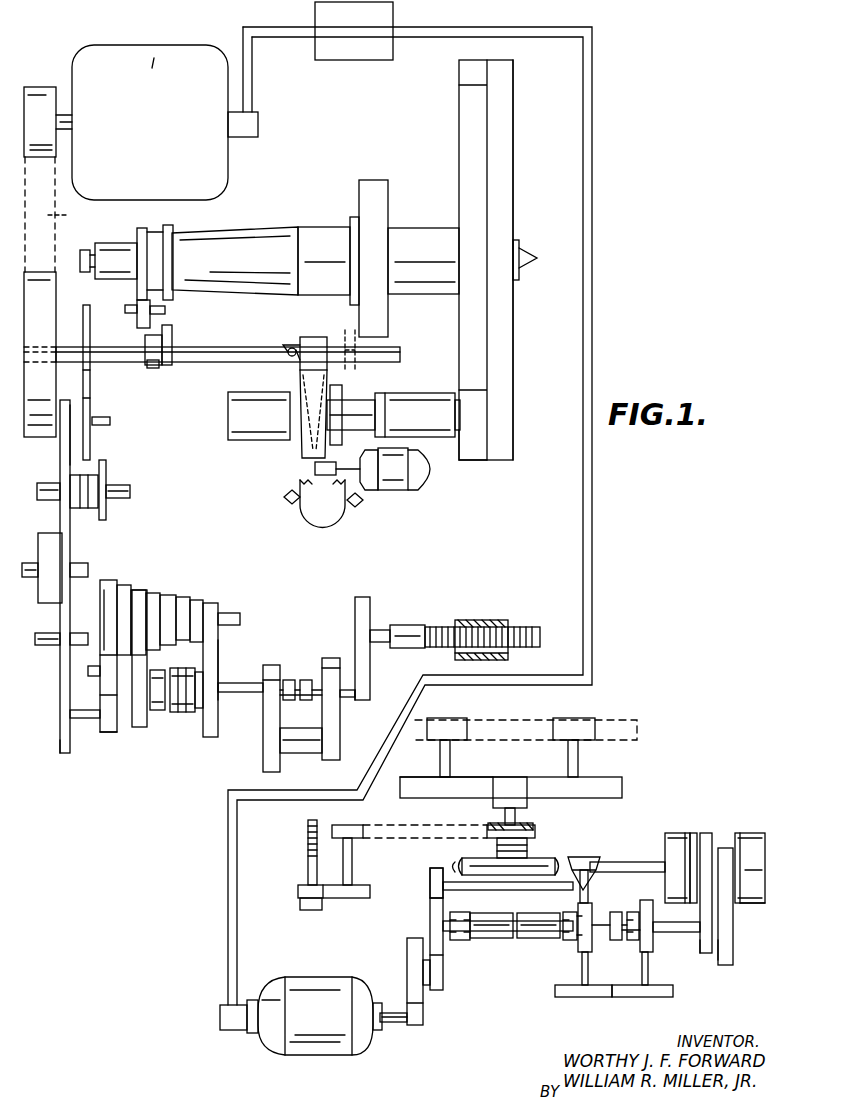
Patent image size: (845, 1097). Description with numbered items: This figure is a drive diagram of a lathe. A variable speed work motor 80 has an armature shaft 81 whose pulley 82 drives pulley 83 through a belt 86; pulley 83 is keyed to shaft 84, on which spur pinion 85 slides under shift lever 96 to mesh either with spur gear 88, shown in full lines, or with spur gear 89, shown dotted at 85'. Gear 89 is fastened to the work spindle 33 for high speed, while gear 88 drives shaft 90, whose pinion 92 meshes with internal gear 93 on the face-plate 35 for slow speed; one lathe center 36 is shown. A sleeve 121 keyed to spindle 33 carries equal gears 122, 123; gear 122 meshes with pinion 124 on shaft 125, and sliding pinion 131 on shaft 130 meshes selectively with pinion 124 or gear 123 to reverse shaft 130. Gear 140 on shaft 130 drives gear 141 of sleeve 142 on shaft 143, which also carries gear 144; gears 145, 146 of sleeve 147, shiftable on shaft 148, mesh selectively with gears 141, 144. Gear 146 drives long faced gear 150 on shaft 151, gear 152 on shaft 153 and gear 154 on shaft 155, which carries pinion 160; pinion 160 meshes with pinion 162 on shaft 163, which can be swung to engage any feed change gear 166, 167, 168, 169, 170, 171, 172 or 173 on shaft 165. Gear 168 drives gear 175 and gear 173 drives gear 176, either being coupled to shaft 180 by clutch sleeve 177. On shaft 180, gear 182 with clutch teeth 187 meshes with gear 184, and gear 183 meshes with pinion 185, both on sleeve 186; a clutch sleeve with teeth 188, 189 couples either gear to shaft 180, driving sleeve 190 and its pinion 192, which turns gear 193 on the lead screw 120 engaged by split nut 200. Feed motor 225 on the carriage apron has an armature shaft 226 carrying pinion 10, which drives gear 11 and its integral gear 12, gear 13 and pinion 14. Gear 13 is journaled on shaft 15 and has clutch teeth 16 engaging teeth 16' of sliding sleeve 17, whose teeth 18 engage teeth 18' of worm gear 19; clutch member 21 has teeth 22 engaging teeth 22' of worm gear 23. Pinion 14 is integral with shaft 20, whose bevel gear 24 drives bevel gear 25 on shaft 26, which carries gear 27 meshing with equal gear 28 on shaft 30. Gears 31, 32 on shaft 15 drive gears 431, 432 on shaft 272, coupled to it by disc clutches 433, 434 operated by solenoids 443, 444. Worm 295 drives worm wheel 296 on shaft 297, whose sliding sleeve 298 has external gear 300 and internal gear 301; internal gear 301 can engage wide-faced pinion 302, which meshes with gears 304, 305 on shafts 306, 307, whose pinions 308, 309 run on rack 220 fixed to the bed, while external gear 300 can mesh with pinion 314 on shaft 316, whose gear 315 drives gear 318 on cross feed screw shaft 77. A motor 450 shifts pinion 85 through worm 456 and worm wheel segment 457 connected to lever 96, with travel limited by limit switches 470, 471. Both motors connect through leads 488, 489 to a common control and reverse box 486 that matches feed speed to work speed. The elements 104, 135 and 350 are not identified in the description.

The spur pinion 10 is at (420, 1015).
The spur gear 11 is at (410, 962).
The spur gear 12 is at (432, 976).
The spur gear 13 is at (430, 916).
The spur pinion 14 is at (430, 883).
The shaft 15 is at (694, 927).
The face clutch teeth 16 is at (459, 939).
The face clutch teeth 16' is at (491, 940).
The sleeve 17 is at (508, 927).
The face clutch teeth 18 is at (558, 941).
The face clutch teeth 18' is at (559, 911).
The worm gear 19 is at (588, 950).
The shaft 20 is at (488, 886).
The slidable clutch member 21 is at (612, 915).
The face clutch teeth 22 is at (626, 951).
The face clutch teeth 22' is at (634, 908).
The worm gear 23 is at (653, 941).
The bevel gear 24 is at (540, 889).
The bevel gear 25 is at (585, 858).
The shaft 26 is at (590, 886).
The spur gear 27 is at (592, 997).
The spur gear 28 is at (647, 997).
The shaft 30 is at (648, 965).
The spur gear 31 is at (706, 955).
The spur gear 32 is at (733, 946).
The work spindle 33 is at (327, 240).
The face-plate 35 is at (503, 321).
The center 36 is at (537, 252).
The screw shaft 77 is at (308, 836).
The motor 80 is at (213, 156).
The armature shaft 81 is at (62, 129).
The pulley 82 is at (42, 158).
The pulley 83 is at (40, 285).
The shaft 84 is at (228, 352).
The spur pinion 85 is at (306, 385).
The spur pinion shifted position 85' is at (386, 343).
The belt 86 is at (69, 215).
The spur gear 88 is at (312, 446).
The spur gear 89 is at (380, 210).
The shaft 90 is at (357, 406).
The pinion 92 is at (470, 428).
The internal gear 93 is at (470, 85).
The shift lever 96 is at (290, 389).
The cylinder 104 is at (420, 410).
The lead screw 120 is at (415, 633).
The sleeve 121 is at (150, 238).
The spur gear 122 is at (136, 240).
The spur gear 123 is at (173, 233).
The spur pinion 124 is at (163, 309).
The shaft 125 is at (131, 308).
The shaft 130 is at (146, 343).
The spur pinion 131 is at (166, 338).
The pin 135 is at (158, 363).
The spur gear 140 is at (90, 372).
The spur gear 141 is at (90, 400).
The sleeve 142 is at (76, 430).
The shaft 143 is at (112, 421).
The spur gear 144 is at (60, 448).
The gear 145 is at (106, 478).
The gear 146 is at (60, 505).
The sleeve 147 is at (88, 511).
The shaft 148 is at (126, 495).
The long faced gear 150 is at (48, 598).
The shaft 151 is at (88, 572).
The gear 152 is at (65, 667).
The shaft 153 is at (46, 646).
The gear 154 is at (62, 749).
The shaft 155 is at (88, 720).
The spur pinion 160 is at (108, 734).
The spur pinion 162 is at (108, 686).
The shaft 163 is at (90, 668).
The shaft 165 is at (226, 626).
The feed change gear 166 is at (109, 585).
The feed change gear 167 is at (128, 595).
The feed change gear 168 is at (140, 598).
The feed change gear 169 is at (158, 601).
The feed change gear 170 is at (166, 609).
The feed change gear 171 is at (186, 611).
The feed change gear 172 is at (200, 615).
The feed change gear 173 is at (220, 618).
The spur gear 175 is at (140, 727).
The spur gear 176 is at (212, 676).
The clutch sleeve 177 is at (178, 712).
The shaft 180 is at (240, 694).
The spur gear 182 is at (272, 666).
The spur gear 183 is at (338, 666).
The spur gear 184 is at (268, 756).
The spur pinion 185 is at (331, 760).
The sleeve 186 is at (300, 754).
The face clutch teeth 187 is at (288, 681).
The face clutch teeth 188 is at (309, 680).
The face clutch teeth 189 is at (296, 701).
The sleeve 190 is at (348, 704).
The spur pinion 192 is at (360, 689).
The spur gear 193 is at (370, 616).
The split nut 200 is at (478, 623).
The rack 220 is at (520, 721).
The variable speed motor 225 is at (334, 1052).
The armature shaft 226 is at (392, 1022).
The shaft 272 is at (600, 862).
The worm 295 is at (525, 865).
The worm wheel 296 is at (455, 866).
The shaft 297 is at (513, 822).
The sleeve 298 is at (497, 848).
The external spur gear 300 is at (535, 833).
The internal gear 301 is at (496, 826).
The wide-faced spur pinion 302 is at (513, 782).
The spur gear 304 is at (622, 788).
The spur gear 305 is at (432, 786).
The shaft 306 is at (578, 758).
The shaft 307 is at (450, 758).
The spur pinion 308 is at (585, 723).
The spur pinion 309 is at (449, 726).
The pinion 314 is at (348, 828).
The gear 315 is at (352, 893).
The shaft 316 is at (352, 862).
The spur gear 318 is at (305, 892).
The plate 350 is at (84, 278).
The spur gear 431 is at (706, 842).
The spur gear 432 is at (725, 851).
The disc clutch 433 is at (693, 840).
The disc clutch 434 is at (740, 904).
The solenoid 443 is at (676, 840).
The solenoid 444 is at (760, 839).
The motor 450 is at (430, 470).
The worm 456 is at (315, 468).
The worm wheel segment 457 is at (310, 505).
The limit switch 470 is at (284, 497).
The limit switch 471 is at (363, 502).
The control and reverse box 486 is at (371, 47).
The leads 488 is at (244, 65).
The leads 489 is at (592, 555).